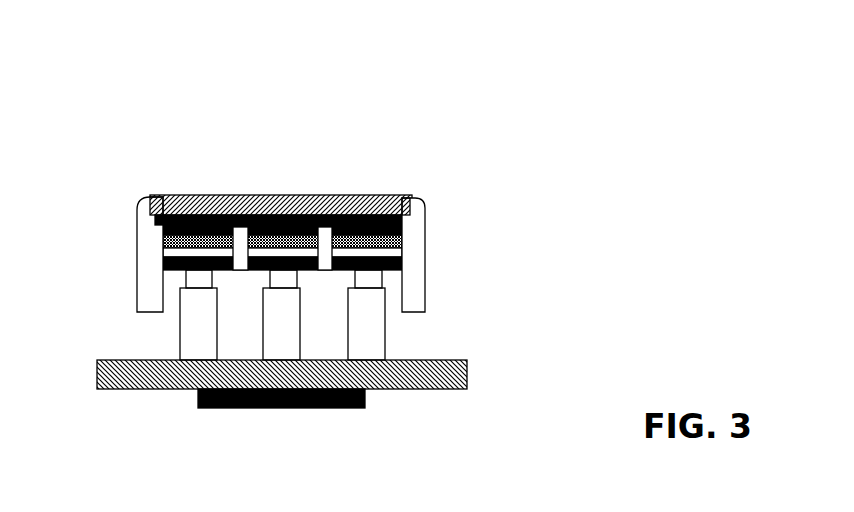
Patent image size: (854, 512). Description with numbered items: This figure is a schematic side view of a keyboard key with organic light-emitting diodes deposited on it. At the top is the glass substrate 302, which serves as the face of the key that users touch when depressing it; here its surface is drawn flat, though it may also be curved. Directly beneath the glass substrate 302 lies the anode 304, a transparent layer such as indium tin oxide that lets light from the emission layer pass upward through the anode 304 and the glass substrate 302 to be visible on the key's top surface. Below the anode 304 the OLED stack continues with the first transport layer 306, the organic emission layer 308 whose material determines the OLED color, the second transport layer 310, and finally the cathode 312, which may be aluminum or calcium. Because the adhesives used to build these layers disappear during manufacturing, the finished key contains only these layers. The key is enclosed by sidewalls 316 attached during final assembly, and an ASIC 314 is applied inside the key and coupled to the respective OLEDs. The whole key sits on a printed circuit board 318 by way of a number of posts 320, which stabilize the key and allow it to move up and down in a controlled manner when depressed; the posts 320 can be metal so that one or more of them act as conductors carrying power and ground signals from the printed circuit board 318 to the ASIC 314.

The glass substrate 302 is at (285, 196).
The anode 304 is at (295, 216).
The first transport layer 306 is at (422, 208).
The organic emission layer 308 is at (403, 230).
The second transport layer 310 is at (403, 252).
The cathode 312 is at (403, 267).
The ASIC 314 is at (362, 419).
The sidewalls 316 is at (145, 216).
The printed circuit board 318 is at (467, 373).
The posts 320 is at (190, 338).